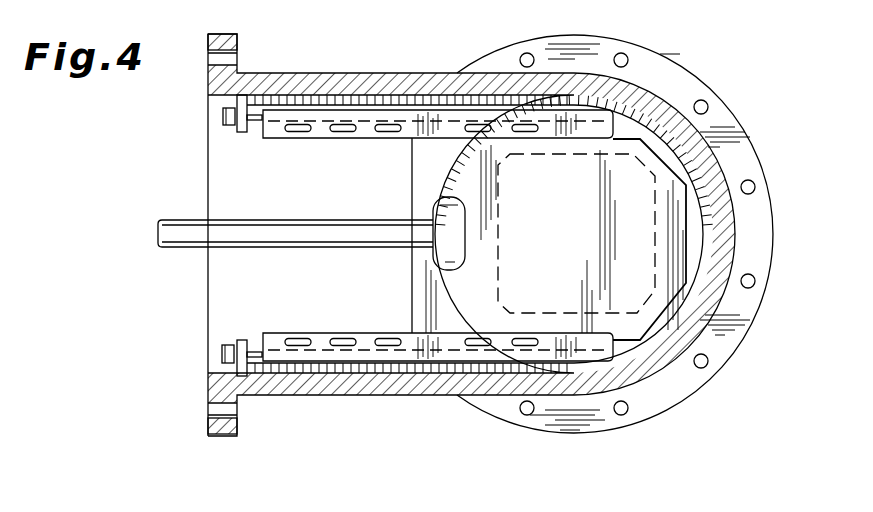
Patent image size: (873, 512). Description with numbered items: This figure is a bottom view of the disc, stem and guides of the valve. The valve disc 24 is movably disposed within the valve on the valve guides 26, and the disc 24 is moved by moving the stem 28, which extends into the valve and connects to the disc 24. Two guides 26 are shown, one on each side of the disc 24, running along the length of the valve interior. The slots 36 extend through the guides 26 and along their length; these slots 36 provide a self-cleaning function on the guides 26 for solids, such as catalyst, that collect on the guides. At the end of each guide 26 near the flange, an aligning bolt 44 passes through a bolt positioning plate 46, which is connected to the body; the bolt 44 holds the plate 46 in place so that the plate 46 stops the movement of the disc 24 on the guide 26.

The valve disc 24 is at (672, 235).
The valve guides 26 is at (596, 127).
The stem 28 is at (185, 248).
The slots 36 is at (517, 125).
The aligning bolt 44 is at (222, 117).
The bolt positioning plate 46 is at (243, 99).